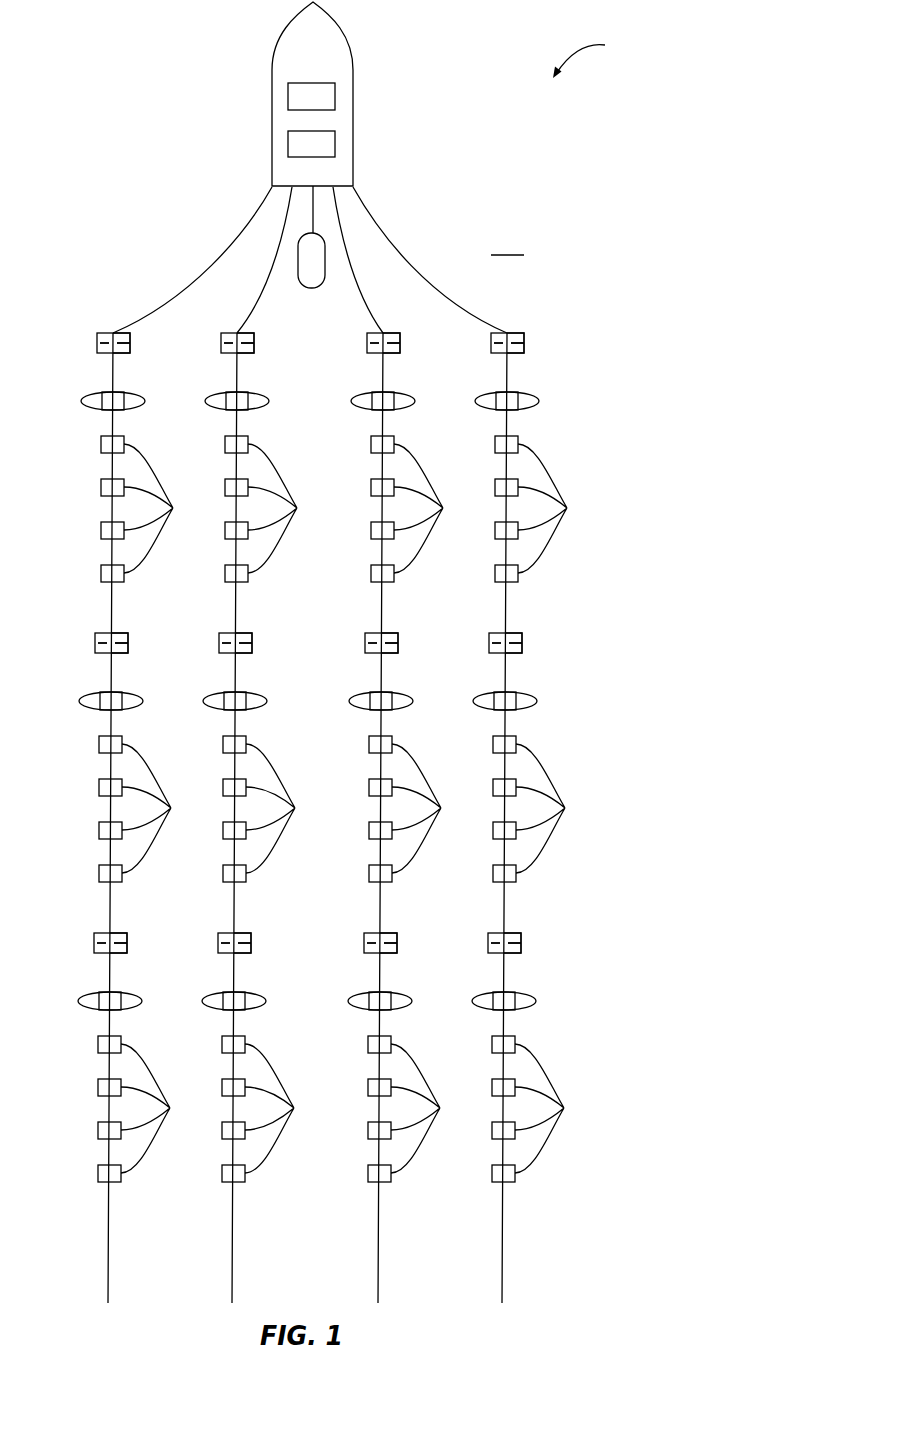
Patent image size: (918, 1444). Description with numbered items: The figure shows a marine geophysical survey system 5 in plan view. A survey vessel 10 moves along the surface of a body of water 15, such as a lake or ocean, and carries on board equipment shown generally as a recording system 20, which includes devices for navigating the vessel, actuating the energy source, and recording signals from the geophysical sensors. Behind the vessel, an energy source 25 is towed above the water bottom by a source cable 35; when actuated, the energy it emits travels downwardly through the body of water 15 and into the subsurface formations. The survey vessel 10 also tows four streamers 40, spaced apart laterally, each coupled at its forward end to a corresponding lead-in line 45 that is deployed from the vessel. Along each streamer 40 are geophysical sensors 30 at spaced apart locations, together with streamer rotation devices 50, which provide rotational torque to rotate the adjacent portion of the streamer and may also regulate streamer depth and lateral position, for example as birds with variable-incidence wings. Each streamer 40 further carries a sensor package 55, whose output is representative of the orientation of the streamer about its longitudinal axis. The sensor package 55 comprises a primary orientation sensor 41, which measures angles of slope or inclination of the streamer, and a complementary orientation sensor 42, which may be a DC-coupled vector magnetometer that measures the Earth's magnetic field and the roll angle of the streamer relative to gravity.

The marine geophysical survey system 5 is at (587, 55).
The survey vessel 10 is at (287, 33).
The body of water 15 is at (507, 242).
The recording system 20 is at (288, 143).
The energy source 25 is at (325, 247).
The geophysical sensors 30 is at (350, 809).
The source cable 35 is at (310, 217).
The streamer 40 is at (272, 818).
The primary orientation sensor 41 is at (292, 624).
The complementary orientation sensor 42 is at (332, 624).
The lead-in line 45 is at (270, 262).
The streamer rotation device 50 is at (294, 718).
The sensor package 55 is at (337, 669).